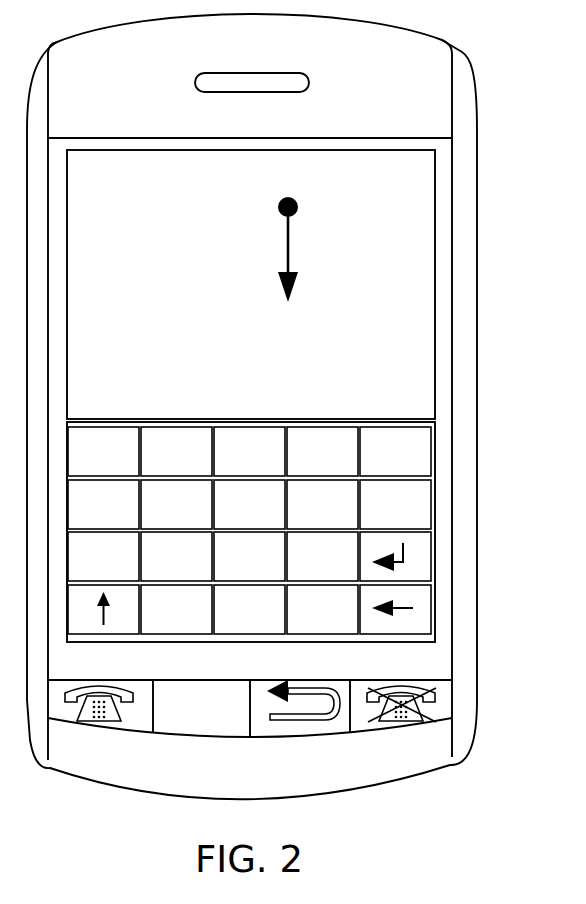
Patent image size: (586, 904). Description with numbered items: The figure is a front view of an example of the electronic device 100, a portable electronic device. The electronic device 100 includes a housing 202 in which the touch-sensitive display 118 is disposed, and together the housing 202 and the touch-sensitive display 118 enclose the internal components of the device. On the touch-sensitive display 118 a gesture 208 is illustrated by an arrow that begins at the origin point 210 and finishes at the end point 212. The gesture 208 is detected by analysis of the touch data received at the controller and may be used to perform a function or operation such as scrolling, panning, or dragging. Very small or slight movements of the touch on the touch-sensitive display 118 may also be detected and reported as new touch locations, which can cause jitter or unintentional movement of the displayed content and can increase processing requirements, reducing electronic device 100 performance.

The electronic device 100 is at (470, 816).
The housing 202 is at (470, 61).
The touch-sensitive display 118 is at (409, 370).
The origin point 210 is at (299, 204).
The gesture 208 is at (291, 258).
The end point 212 is at (288, 302).